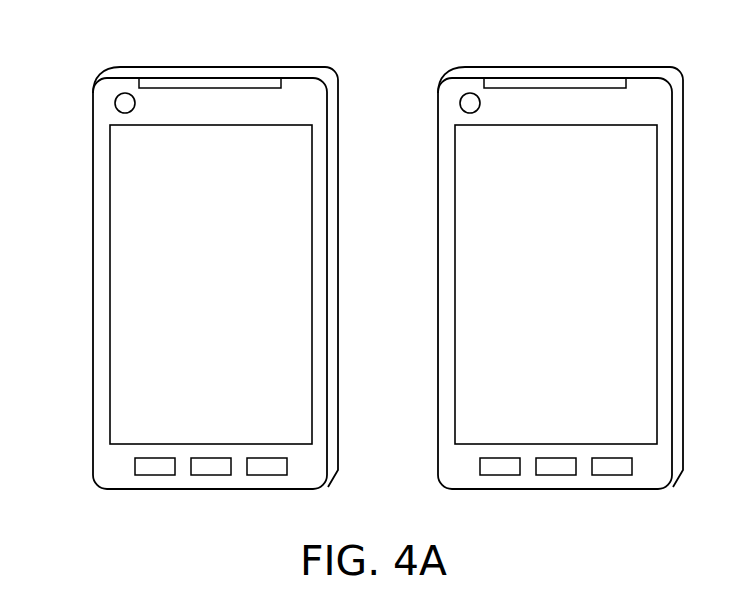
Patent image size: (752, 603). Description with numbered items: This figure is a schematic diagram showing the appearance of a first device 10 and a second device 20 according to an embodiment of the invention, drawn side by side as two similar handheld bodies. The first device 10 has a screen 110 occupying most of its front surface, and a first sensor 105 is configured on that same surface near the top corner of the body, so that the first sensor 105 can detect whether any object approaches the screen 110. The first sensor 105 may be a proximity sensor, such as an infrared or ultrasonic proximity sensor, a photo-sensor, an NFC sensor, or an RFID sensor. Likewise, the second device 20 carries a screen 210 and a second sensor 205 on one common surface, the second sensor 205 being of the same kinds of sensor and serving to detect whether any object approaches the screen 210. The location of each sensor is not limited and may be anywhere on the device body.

The first device 10 is at (213, 67).
The first sensor 105 is at (125, 93).
The screen 110 is at (137, 263).
The second device 20 is at (558, 67).
The second sensor 205 is at (470, 93).
The screen 210 is at (482, 263).